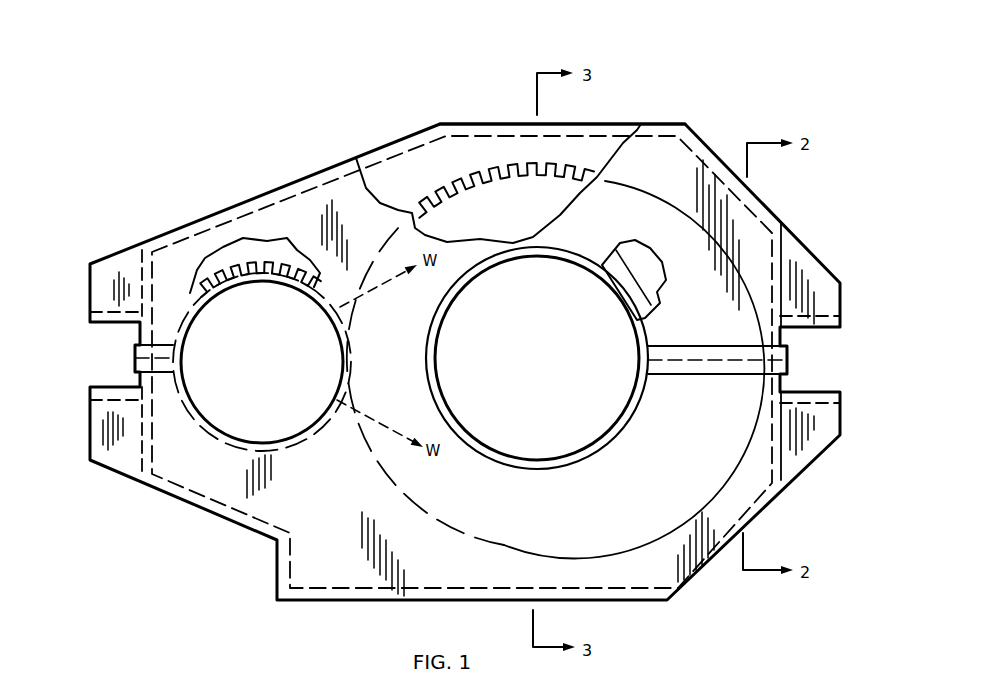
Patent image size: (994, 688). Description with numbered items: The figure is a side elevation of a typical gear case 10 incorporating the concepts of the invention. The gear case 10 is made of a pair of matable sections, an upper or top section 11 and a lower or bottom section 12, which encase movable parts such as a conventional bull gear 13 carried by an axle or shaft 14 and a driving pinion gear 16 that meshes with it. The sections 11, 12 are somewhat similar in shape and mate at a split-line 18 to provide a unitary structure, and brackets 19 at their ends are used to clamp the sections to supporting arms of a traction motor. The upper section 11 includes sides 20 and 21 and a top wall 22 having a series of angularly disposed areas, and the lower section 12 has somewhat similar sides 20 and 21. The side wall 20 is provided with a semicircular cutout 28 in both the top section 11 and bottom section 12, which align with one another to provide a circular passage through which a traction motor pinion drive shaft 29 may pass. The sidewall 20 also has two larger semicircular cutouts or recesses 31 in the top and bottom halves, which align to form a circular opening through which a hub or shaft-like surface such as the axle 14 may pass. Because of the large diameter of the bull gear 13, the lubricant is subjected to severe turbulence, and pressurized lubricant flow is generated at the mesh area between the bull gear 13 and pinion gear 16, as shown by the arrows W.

The gear case 10 is at (303, 102).
The upper section 11 is at (672, 174).
The lower section 12 is at (355, 558).
The bull gear 13 is at (487, 170).
The axle 14 is at (597, 353).
The driving pinion gear 16 is at (265, 263).
The split-line 18 is at (718, 362).
The brackets 19 is at (90, 293).
The side wall 20 is at (675, 520).
The side 21 is at (388, 229).
The top wall 22 is at (471, 123).
The semicircular cutout 28 is at (192, 400).
The traction motor pinion drive shaft 29 is at (272, 375).
The semicircular cutouts 31 is at (452, 415).